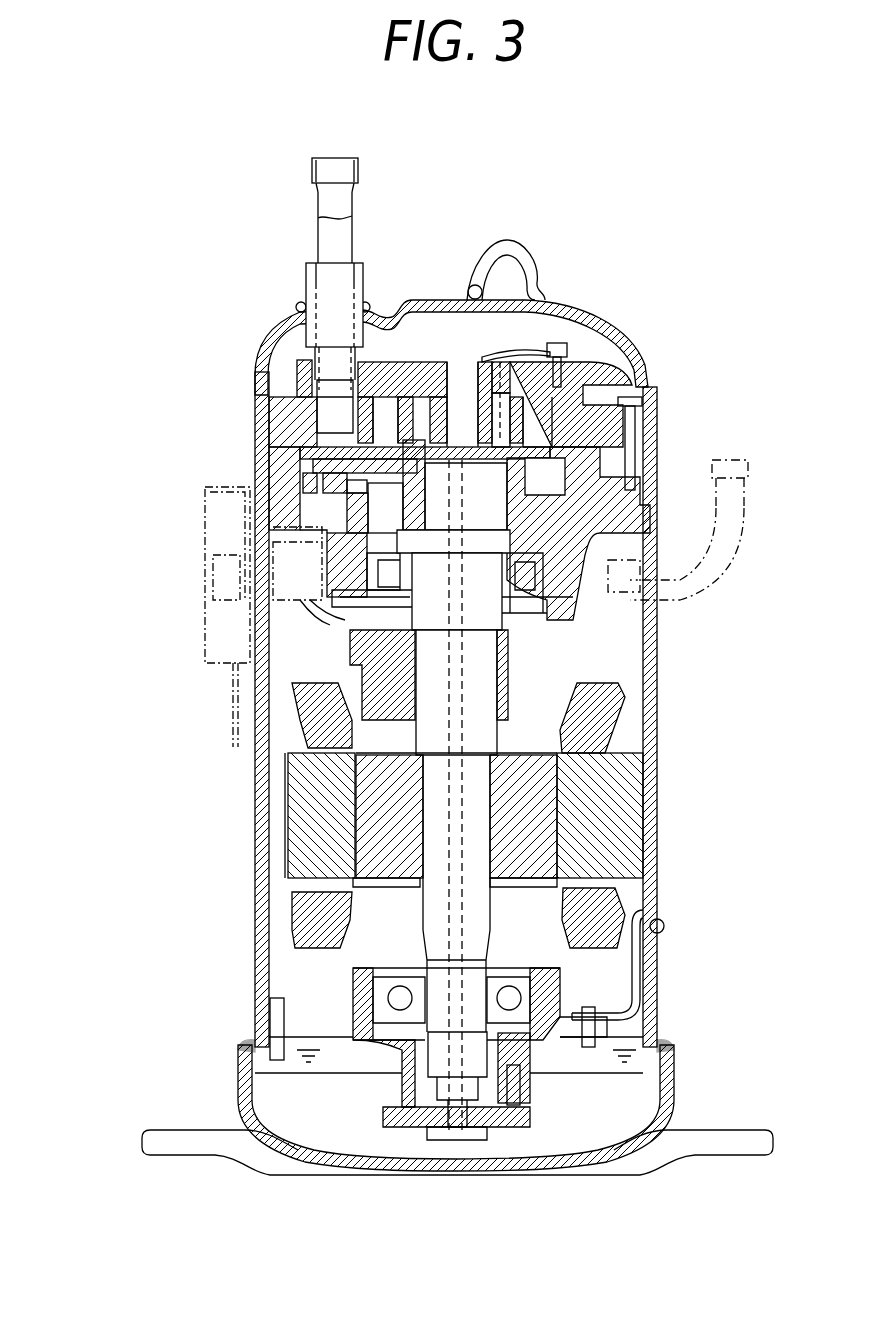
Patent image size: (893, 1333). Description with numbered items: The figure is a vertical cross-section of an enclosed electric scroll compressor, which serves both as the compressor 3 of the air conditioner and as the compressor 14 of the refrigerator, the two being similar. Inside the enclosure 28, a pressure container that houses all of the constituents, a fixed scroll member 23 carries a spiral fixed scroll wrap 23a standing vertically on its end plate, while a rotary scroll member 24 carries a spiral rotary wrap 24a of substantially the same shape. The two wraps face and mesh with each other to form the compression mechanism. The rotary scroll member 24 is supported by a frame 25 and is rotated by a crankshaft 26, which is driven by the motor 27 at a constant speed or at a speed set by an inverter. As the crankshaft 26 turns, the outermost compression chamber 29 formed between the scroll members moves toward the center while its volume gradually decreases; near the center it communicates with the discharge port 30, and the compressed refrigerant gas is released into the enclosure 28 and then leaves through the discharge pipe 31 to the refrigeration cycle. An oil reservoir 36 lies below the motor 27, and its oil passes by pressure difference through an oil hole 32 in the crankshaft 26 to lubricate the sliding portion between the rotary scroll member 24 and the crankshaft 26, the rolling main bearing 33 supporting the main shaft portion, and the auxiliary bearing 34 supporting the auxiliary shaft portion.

The compressor 3 is at (168, 652).
The compressor 14 is at (181, 571).
The fixed scroll member 23 is at (411, 377).
The fixed scroll wrap 23a is at (523, 420).
The rotary scroll member 24 is at (527, 460).
The rotary wrap 24a is at (513, 400).
The frame 25 is at (287, 482).
The crankshaft 26 is at (483, 665).
The motor 27 is at (625, 797).
The enclosure 28 is at (262, 827).
The compression chamber 29 is at (387, 413).
The discharge port 30 is at (460, 367).
The discharge pipe 31 is at (733, 462).
The oil hole 32 is at (448, 1052).
The main bearing 33 is at (383, 572).
The auxiliary bearing 34 is at (508, 994).
The oil reservoir 36 is at (618, 1063).